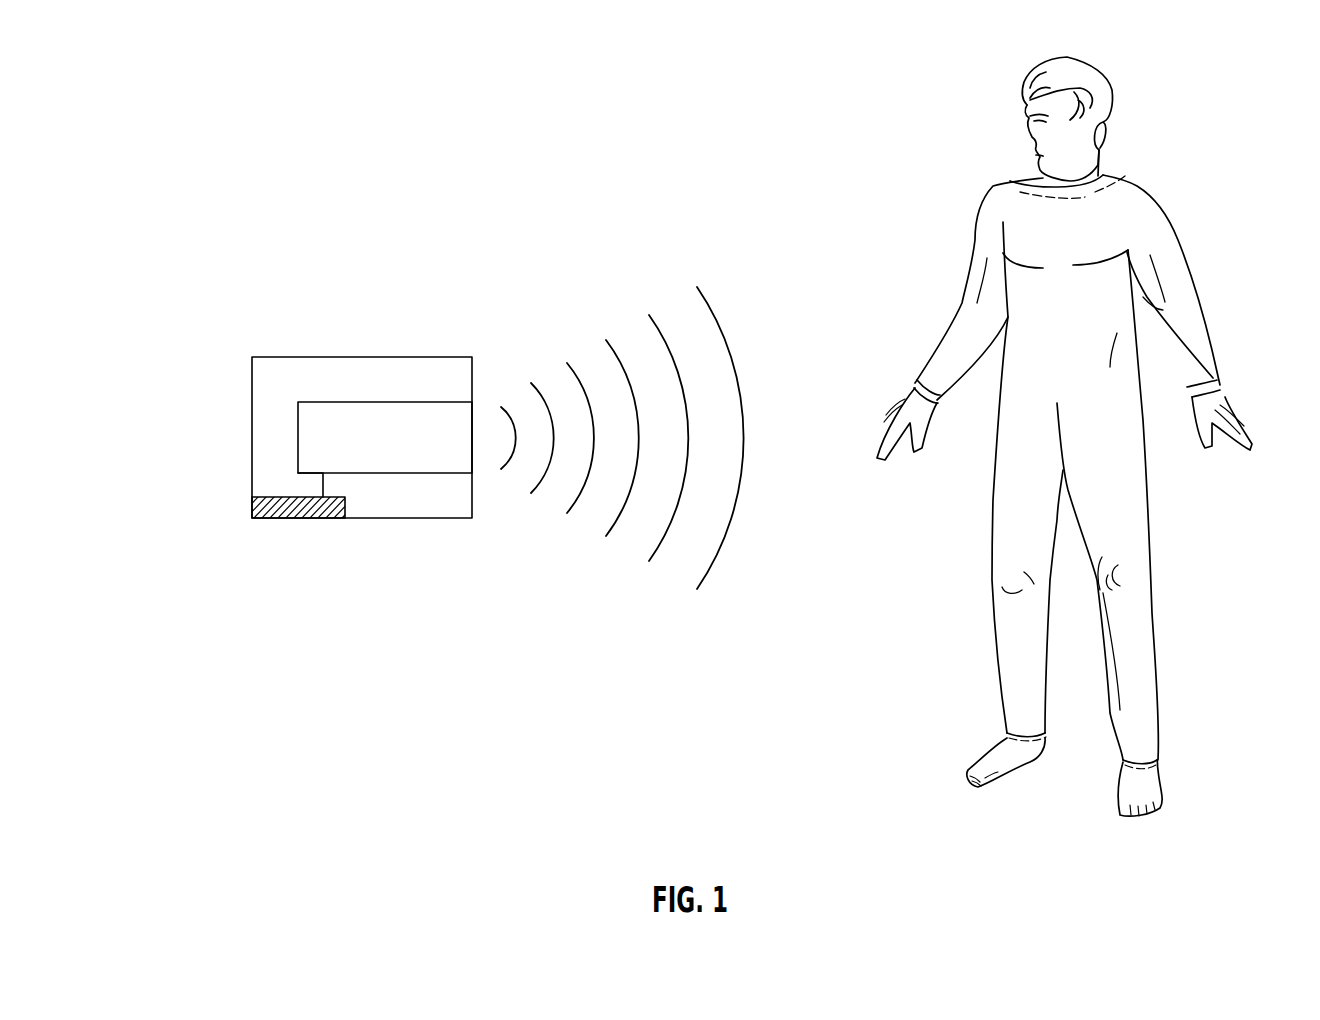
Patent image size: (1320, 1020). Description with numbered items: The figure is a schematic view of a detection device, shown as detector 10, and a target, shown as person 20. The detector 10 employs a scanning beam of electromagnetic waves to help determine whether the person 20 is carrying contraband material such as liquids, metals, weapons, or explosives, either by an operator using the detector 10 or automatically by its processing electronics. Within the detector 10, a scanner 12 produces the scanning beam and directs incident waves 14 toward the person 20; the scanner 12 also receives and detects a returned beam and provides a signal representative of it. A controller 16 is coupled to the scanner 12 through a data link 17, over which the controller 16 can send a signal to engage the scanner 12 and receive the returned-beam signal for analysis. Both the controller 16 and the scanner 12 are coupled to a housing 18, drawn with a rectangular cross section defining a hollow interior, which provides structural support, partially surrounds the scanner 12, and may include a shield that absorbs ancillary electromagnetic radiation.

The detector 10 is at (235, 232).
The scanner 12 is at (315, 424).
The incident waves 14 is at (563, 318).
The controller 16 is at (290, 520).
The data link 17 is at (322, 485).
The housing 18 is at (252, 383).
The person 20 is at (1124, 188).